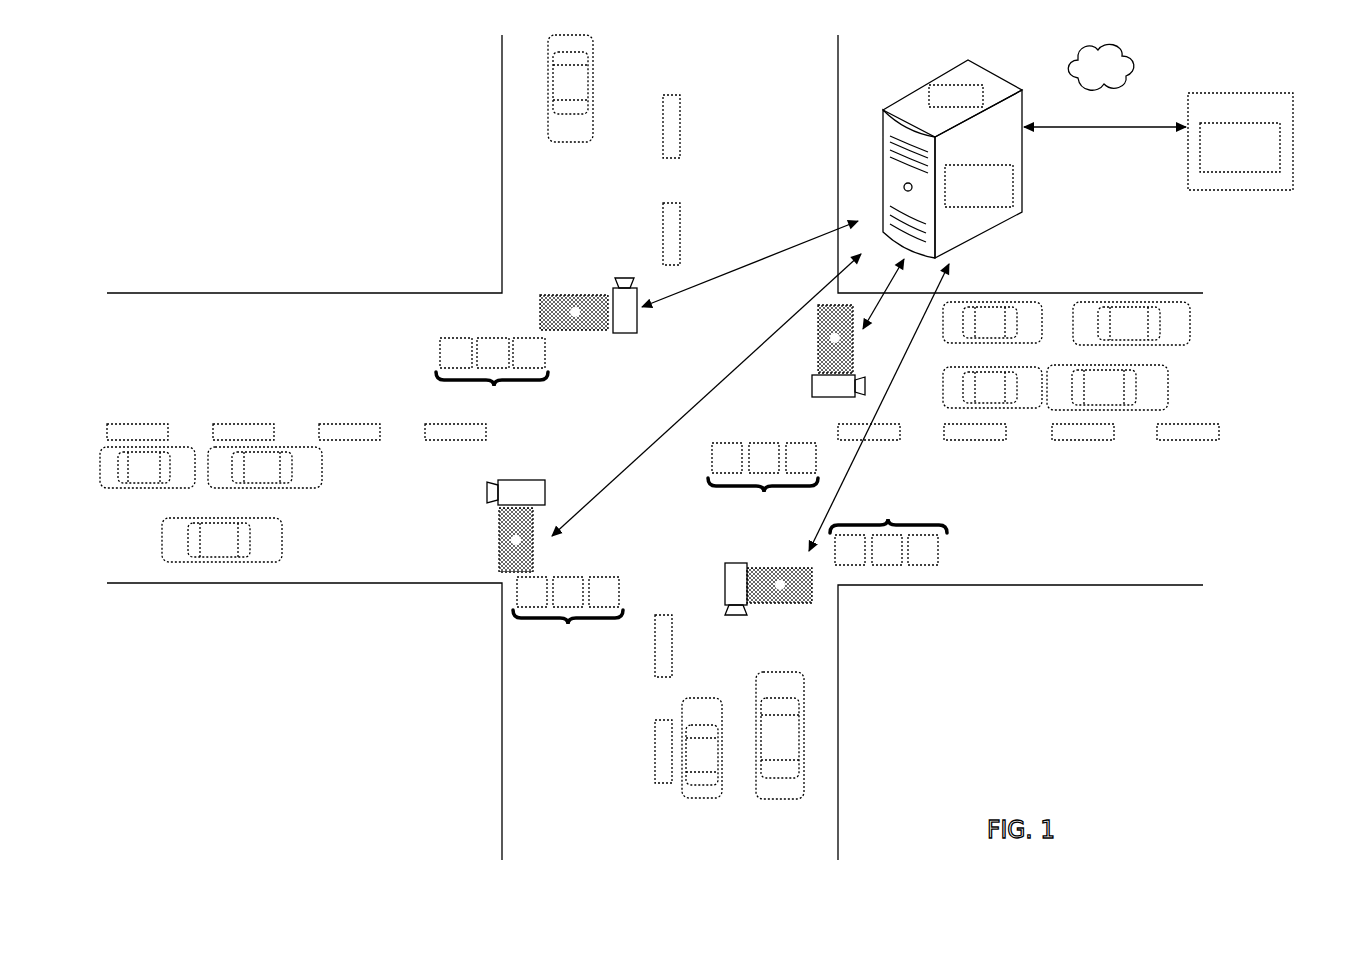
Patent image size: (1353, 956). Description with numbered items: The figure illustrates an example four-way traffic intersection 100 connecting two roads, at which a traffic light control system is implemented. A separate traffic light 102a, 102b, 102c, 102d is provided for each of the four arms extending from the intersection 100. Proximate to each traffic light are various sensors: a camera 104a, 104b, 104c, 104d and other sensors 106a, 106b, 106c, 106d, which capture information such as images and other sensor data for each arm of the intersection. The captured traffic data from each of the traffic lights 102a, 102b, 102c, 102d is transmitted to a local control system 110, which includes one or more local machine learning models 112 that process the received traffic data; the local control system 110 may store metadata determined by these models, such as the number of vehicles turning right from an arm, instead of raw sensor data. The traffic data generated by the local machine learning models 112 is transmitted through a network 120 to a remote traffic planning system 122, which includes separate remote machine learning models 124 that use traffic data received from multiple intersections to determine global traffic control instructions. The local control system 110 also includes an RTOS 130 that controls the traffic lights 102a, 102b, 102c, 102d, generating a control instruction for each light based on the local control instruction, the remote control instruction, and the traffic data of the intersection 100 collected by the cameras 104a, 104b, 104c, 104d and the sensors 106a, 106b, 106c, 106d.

The traffic intersection 100 is at (287, 120).
The local control system 110 is at (982, 63).
The local machine learning models 112 is at (1013, 172).
The network 120 is at (1072, 68).
The remote traffic planning system 122 is at (1188, 181).
The remote machine learning models 124 is at (1200, 147).
The RTOS 130 is at (929, 98).
The traffic light 102a is at (540, 312).
The traffic light 102b is at (818, 337).
The traffic light 102c is at (499, 538).
The traffic light 102d is at (765, 568).
The camera 104a is at (618, 333).
The camera 104b is at (832, 397).
The camera 104c is at (520, 480).
The camera 104d is at (725, 585).
The sensor 106a is at (492, 373).
The sensor 106b is at (763, 478).
The sensor 106c is at (568, 611).
The sensor 106d is at (888, 532).